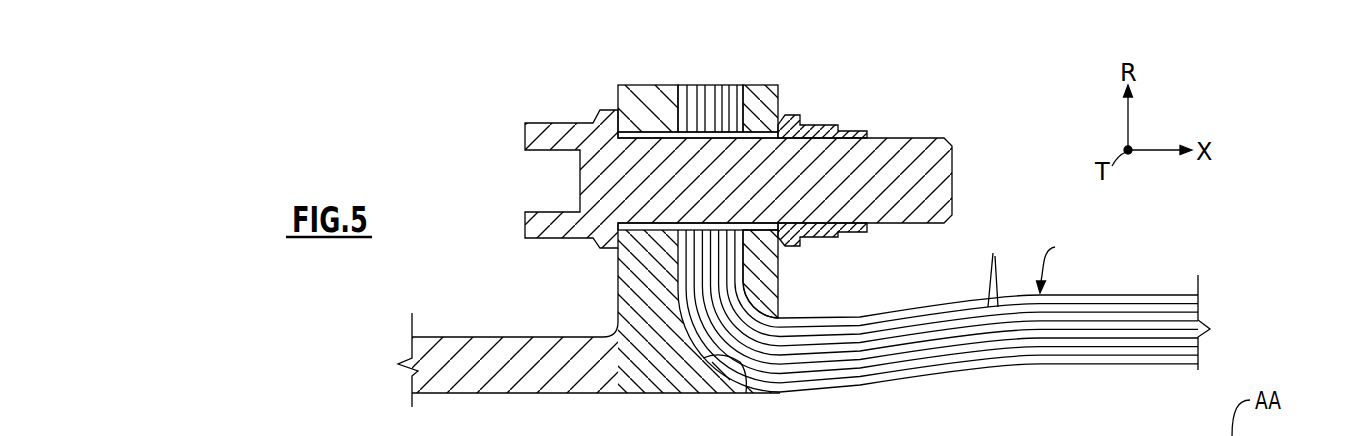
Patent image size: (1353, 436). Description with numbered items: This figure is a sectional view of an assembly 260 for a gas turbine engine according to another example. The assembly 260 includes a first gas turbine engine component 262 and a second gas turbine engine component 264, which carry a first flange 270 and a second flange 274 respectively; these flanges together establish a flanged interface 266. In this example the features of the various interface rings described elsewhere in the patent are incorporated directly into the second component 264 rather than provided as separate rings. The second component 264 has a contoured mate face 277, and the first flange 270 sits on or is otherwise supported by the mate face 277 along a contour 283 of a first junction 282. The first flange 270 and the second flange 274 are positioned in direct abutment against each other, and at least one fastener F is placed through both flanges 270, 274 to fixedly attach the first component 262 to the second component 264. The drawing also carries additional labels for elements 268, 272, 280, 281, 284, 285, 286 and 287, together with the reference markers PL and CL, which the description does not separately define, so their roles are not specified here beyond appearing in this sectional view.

The assembly 260 is at (482, 106).
The first gas turbine engine component 262 is at (1160, 264).
The second gas turbine engine component 264 is at (447, 318).
The flanged interface 266 is at (609, 60).
The composite laminate 268 is at (1065, 297).
The first flange 270 is at (722, 85).
The base flange 272 is at (492, 345).
The second flange 274 is at (648, 85).
The contoured mate face 277 is at (747, 363).
The collar 280 is at (771, 74).
The outer ply 281 is at (747, 290).
The first junction 282 is at (740, 328).
The contour 283 is at (778, 340).
The radius filler 284 is at (672, 372).
The ply 285 is at (790, 318).
The ply transition region 286 is at (922, 308).
The filler edge 287 is at (703, 358).
The fastener F is at (923, 140).
The ply line PL is at (993, 253).
The centerline CL is at (1058, 260).